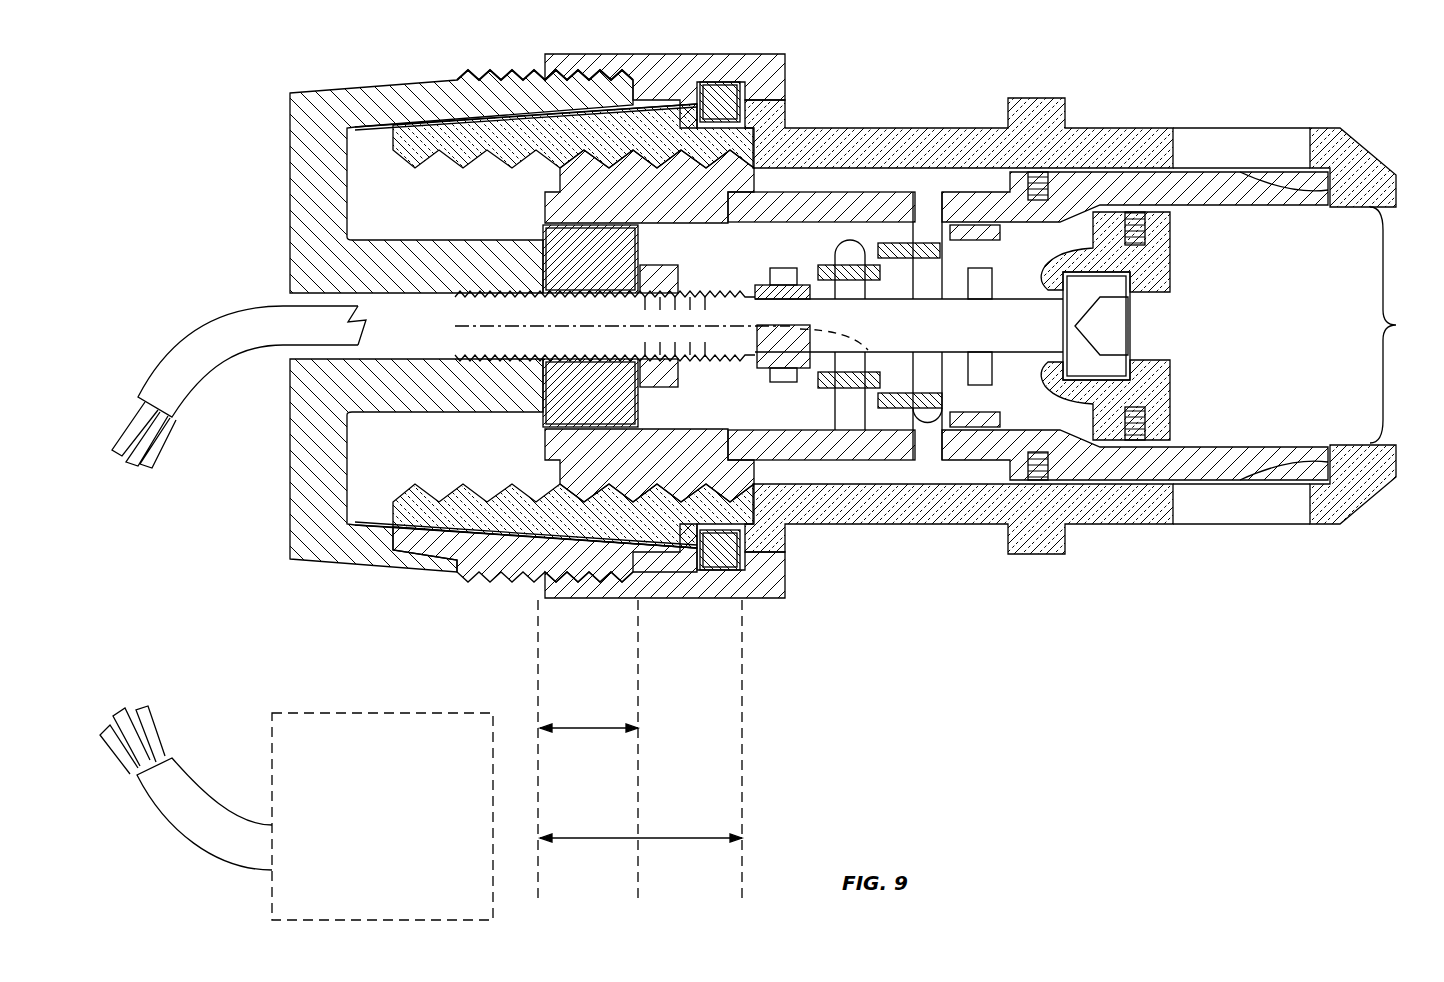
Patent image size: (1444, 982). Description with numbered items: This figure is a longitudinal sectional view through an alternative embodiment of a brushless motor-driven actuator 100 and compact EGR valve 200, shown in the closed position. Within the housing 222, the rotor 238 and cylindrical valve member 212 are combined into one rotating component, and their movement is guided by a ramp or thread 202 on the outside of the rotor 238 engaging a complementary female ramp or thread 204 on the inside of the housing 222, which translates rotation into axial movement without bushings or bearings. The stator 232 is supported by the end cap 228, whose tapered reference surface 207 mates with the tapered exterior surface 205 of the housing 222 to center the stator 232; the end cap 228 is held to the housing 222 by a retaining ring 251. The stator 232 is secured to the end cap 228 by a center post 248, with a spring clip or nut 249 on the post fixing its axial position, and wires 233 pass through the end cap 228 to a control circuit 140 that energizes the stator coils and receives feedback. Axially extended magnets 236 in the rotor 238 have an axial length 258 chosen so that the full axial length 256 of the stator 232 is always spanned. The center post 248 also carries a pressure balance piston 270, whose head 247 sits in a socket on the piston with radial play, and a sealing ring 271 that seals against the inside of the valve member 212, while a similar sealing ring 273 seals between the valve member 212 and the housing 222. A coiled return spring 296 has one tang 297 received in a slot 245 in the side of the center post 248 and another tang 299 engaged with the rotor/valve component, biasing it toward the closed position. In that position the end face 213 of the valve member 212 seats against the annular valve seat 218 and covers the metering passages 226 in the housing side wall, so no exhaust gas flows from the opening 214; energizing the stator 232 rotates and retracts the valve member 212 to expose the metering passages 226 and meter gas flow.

The actuator 100 is at (528, 222).
The control circuit 140 is at (382, 816).
The compact EGR valve 200 is at (985, 120).
The ramp or thread 202 is at (548, 196).
The ramp or thread 204 is at (455, 497).
The tapered exterior surface 205 is at (418, 527).
The tapered reference surface 207 is at (323, 93).
The valve member 212 is at (1120, 168).
The end face 213 is at (1262, 460).
The opening 214 is at (1403, 325).
The annular valve seat 218 is at (1332, 198).
The housing 222 is at (858, 120).
The metering passages 226 is at (1180, 122).
The end cap 228 is at (287, 218).
The stator 232 is at (540, 422).
The wires 233 is at (163, 360).
The magnets 236 is at (690, 213).
The rotor 238 is at (818, 458).
The slot 245 is at (712, 355).
The head 247 is at (1115, 330).
The center post 248 is at (587, 327).
The spring clip or nut 249 is at (661, 268).
The retaining ring 251 is at (660, 602).
The axial length of the stator 256 is at (618, 735).
The axial length of the rotor magnets 258 is at (618, 845).
The pressure balance piston 270 is at (1160, 382).
The sealing ring 271 is at (1155, 432).
The sealing ring 273 is at (1037, 480).
The return spring 296 is at (890, 410).
The tang 297 is at (783, 331).
The tang 299 is at (975, 432).